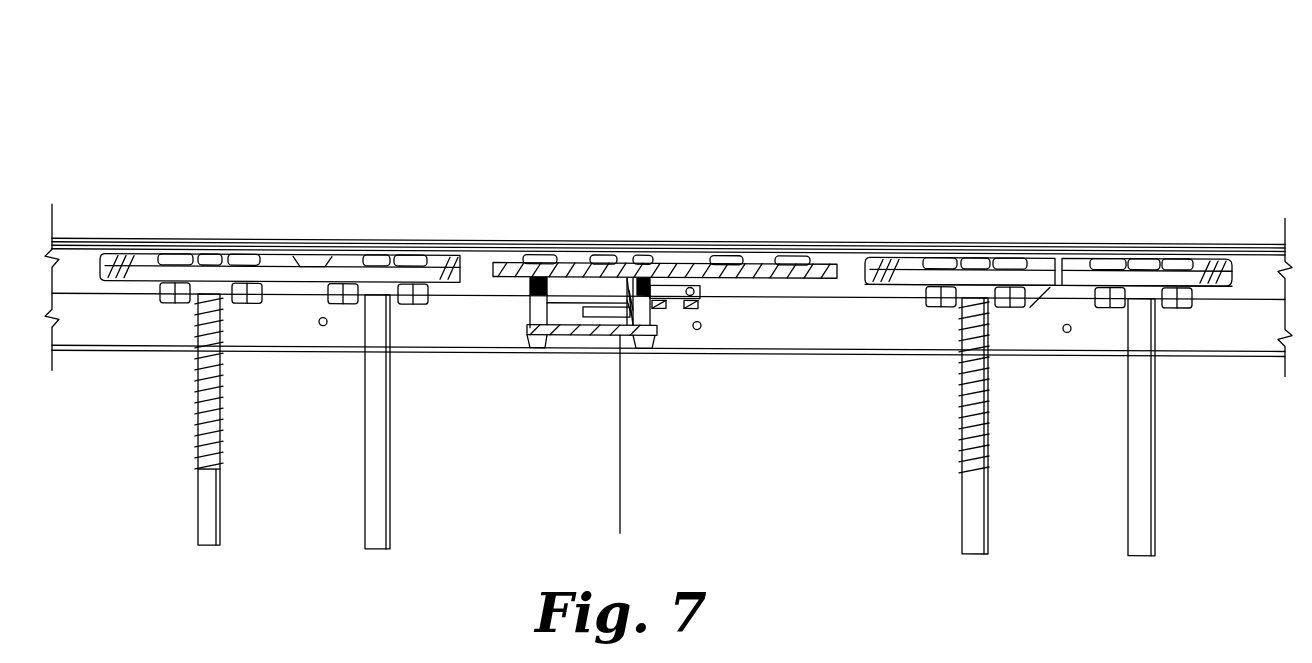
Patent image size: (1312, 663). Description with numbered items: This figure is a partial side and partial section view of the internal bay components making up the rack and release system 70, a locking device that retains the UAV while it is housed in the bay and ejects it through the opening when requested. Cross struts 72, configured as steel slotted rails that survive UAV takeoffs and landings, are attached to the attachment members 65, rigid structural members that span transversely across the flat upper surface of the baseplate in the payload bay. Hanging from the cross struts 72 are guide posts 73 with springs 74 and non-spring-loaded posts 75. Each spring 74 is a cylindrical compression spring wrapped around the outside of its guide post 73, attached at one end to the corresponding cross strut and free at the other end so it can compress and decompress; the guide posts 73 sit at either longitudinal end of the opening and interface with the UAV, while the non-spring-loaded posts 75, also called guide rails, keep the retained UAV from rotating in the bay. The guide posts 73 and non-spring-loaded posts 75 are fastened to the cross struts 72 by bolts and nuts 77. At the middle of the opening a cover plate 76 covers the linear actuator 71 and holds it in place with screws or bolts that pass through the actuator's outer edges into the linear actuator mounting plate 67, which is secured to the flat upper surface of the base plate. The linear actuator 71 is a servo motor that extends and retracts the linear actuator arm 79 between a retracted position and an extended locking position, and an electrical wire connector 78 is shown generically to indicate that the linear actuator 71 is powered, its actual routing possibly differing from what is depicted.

The rack and release system 70 is at (198, 115).
The attachment members 65 is at (90, 242).
The linear actuator mounting plate 67 is at (624, 268).
The linear actuator 71 is at (583, 298).
The cross struts 72 is at (914, 282).
The guide posts 73 is at (198, 506).
The springs 74 is at (198, 447).
The non-spring-loaded posts 75 is at (1138, 553).
The cover plate 76 is at (580, 340).
The bolts and nuts 77 is at (942, 338).
The electrical wire connector 78 is at (620, 462).
The linear actuator arm 79 is at (675, 302).